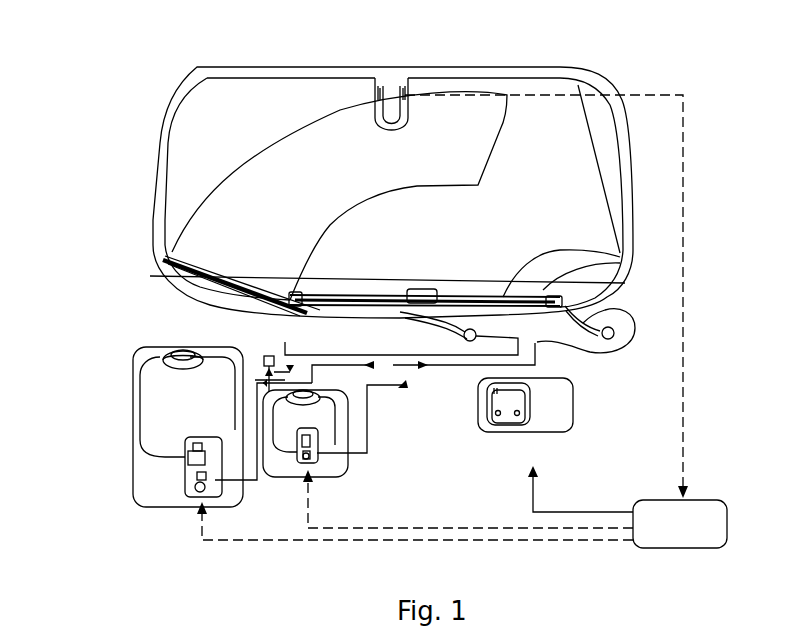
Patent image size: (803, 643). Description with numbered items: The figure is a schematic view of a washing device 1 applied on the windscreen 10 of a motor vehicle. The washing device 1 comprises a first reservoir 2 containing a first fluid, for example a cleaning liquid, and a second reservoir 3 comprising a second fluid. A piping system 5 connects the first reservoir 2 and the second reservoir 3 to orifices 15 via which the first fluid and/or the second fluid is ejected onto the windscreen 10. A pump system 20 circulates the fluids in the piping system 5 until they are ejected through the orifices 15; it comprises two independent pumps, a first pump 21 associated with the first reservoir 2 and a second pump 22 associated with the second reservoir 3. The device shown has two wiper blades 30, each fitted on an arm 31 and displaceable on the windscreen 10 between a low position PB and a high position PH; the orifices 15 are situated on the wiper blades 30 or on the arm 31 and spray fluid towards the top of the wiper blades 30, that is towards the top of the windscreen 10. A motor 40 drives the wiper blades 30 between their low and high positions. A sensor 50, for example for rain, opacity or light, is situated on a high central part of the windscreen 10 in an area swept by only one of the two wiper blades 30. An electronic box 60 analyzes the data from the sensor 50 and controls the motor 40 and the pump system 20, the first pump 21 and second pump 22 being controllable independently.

The washing device 1 is at (110, 309).
The first reservoir 2 is at (153, 403).
The second reservoir 3 is at (318, 422).
The piping system 5 is at (537, 343).
The windscreen 10 is at (218, 100).
The orifices 15 is at (270, 293).
The pump system 20 is at (262, 500).
The first pump 21 is at (197, 483).
The second pump 22 is at (307, 457).
The wiper blade 30 is at (627, 253).
The arm 31 is at (620, 310).
The motor 40 is at (565, 423).
The sensor 50 is at (392, 117).
The electronic box 60 is at (715, 513).
The low position PB is at (158, 275).
The high position PH is at (507, 127).